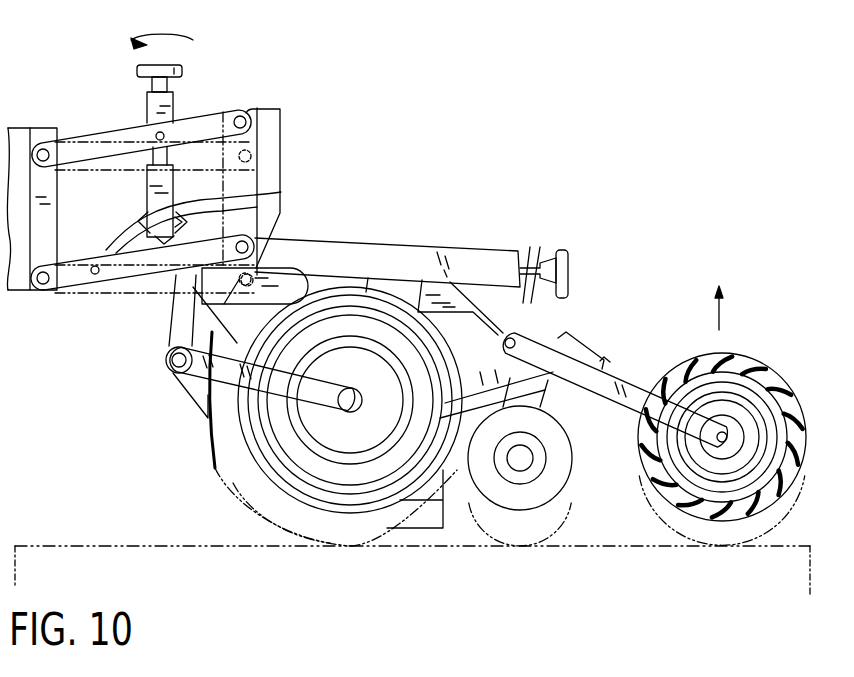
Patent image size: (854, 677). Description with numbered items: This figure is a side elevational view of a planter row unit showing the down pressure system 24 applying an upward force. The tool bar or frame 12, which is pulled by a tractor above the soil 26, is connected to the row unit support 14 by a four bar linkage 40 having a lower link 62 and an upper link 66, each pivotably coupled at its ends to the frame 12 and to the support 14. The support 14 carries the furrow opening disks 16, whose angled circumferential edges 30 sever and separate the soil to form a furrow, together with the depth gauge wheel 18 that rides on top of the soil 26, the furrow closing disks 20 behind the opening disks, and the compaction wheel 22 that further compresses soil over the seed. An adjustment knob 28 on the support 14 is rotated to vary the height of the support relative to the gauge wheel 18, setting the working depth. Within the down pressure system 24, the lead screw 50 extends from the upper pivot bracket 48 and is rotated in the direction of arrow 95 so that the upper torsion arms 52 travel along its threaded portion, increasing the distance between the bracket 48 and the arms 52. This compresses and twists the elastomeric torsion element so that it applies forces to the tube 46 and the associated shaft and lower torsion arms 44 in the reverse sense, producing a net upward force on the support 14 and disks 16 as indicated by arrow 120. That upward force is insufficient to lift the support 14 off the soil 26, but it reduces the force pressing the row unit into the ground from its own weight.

The frame 12 is at (50, 127).
The row unit support 14 is at (382, 240).
The furrow opening disks 16 is at (235, 443).
The depth gauge wheel 18 is at (378, 498).
The furrow closing disks 20 is at (576, 450).
The compaction wheel 22 is at (747, 358).
The down pressure system 24 is at (68, 82).
The soil 26 is at (64, 545).
The adjustment knob 28 is at (567, 249).
The circumferential edges 30 is at (298, 550).
The four bar linkage 40 is at (107, 125).
The lower torsion arms 44 is at (113, 243).
The tube 46 is at (281, 192).
The upper pivot bracket 48 is at (175, 101).
The lead screw 50 is at (184, 70).
The upper torsion arms 52 is at (147, 197).
The lower link 62 is at (131, 276).
The upper link 66 is at (213, 112).
The arrow 95 is at (197, 33).
The arrow 120 is at (712, 307).